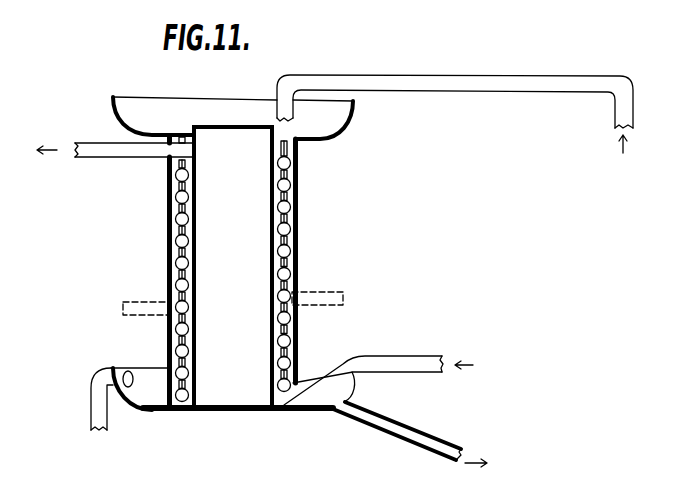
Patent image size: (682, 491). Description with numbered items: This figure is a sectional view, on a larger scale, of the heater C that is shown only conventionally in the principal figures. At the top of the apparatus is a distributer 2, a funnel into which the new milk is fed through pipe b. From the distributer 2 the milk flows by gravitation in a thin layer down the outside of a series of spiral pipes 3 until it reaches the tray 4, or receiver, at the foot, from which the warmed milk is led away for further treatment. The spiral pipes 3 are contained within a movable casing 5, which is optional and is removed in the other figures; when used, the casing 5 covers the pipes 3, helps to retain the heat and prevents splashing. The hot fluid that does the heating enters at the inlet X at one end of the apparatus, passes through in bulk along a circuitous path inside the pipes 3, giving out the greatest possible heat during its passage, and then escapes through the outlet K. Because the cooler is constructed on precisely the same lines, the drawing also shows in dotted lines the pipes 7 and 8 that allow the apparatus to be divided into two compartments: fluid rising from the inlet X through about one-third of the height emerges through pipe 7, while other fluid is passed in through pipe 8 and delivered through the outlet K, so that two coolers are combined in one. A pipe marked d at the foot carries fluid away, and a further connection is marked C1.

The distributer 2 is at (233, 118).
The spiral pipes 3 is at (176, 197).
The tray 4 is at (139, 389).
The movable casing 5 is at (167, 250).
The pipe 7 is at (132, 317).
The pipe 8 is at (315, 290).
The pipe b is at (417, 78).
The outlet K is at (114, 169).
The inlet X is at (418, 363).
The discharge pipe d is at (438, 445).
The pipe C1 is at (98, 412).